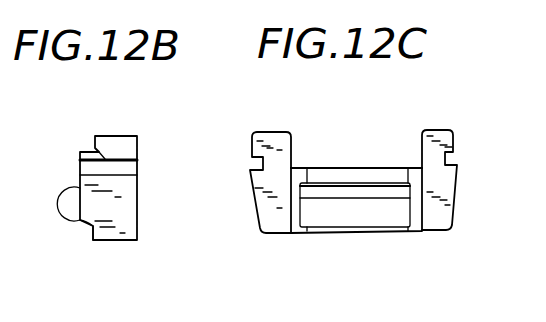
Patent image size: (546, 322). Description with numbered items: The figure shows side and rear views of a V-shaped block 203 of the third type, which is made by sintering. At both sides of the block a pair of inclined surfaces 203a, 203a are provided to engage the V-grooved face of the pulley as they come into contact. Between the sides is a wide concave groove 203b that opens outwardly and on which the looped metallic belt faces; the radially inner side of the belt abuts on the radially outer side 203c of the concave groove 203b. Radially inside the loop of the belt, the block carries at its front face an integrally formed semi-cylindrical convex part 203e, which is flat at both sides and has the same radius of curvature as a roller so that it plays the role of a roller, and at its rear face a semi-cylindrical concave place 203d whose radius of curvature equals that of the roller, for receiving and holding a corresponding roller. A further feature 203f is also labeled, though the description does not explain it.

In FIG. 12B, the V-shaped block 203 is at (150, 142).
In FIG. 12C, the V-shaped block 203 is at (401, 239).
In FIG. 12B, the inclined surfaces 203a is at (125, 188).
In FIG. 12C, the inclined surfaces 203a is at (253, 192).
In FIG. 12C, the concave groove 203b is at (422, 150).
In FIG. 12C, the radially outer side of the concave groove 203c is at (323, 168).
In FIG. 12C, the semi-cylindrical concave place 203d is at (343, 212).
In FIG. 12B, the semi-cylindrical convex part 203e is at (68, 190).
In FIG. 12B, the step 203f is at (78, 218).